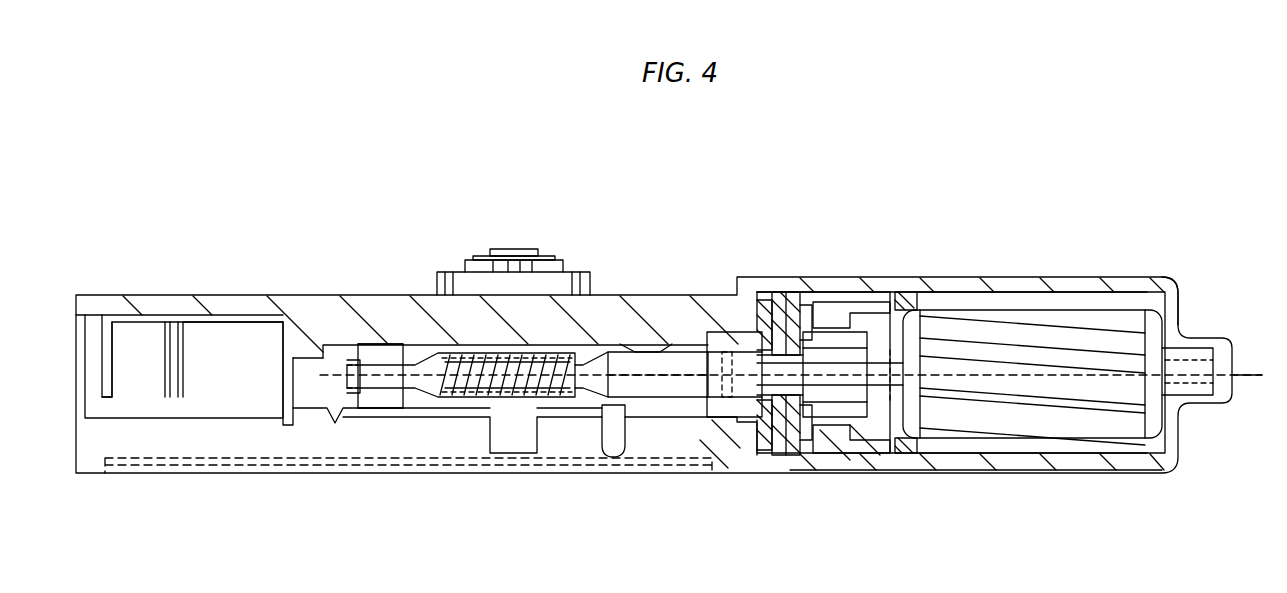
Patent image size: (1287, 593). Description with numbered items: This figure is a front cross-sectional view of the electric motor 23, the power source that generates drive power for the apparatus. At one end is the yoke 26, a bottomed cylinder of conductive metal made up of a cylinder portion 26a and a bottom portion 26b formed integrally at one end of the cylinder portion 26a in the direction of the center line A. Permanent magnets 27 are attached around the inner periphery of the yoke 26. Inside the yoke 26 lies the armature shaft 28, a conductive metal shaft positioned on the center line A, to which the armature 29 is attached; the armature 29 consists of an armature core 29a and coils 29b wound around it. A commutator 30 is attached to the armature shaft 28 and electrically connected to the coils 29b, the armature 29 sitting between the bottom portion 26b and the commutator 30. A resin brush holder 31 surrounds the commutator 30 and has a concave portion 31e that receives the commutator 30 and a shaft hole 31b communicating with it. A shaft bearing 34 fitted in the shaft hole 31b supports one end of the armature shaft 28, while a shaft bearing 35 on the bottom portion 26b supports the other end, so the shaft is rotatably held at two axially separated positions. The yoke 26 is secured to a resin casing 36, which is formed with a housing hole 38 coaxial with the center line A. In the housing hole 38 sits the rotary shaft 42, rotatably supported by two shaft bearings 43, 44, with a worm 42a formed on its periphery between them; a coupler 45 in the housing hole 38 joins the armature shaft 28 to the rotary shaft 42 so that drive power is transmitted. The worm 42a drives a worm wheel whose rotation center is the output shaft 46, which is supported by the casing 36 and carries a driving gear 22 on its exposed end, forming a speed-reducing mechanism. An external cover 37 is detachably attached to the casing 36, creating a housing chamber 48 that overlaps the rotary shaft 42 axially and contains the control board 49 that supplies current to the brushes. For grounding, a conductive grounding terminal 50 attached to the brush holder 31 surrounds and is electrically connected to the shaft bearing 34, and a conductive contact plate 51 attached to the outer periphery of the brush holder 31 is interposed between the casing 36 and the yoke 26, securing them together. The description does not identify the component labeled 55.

The driving gear 22 is at (548, 261).
The electric motor 23 is at (797, 210).
The yoke 26 is at (1015, 272).
The cylinder portion 26a is at (990, 455).
The bottom portion 26b is at (1190, 295).
The permanent magnets 27 is at (1112, 290).
The armature shaft 28 is at (875, 430).
The armature 29 is at (910, 292).
The armature core 29a is at (1122, 420).
The coils 29b is at (905, 445).
The commutator 30 is at (860, 330).
The brush holder 31 is at (845, 470).
The shaft hole 31b is at (775, 292).
The concave portion 31e is at (797, 292).
The shaft bearing 34 is at (772, 458).
The shaft bearing 35 is at (1188, 410).
The casing 36 is at (249, 288).
The external cover 37 is at (344, 482).
The housing hole 38 is at (405, 345).
The rotary shaft 42 is at (581, 408).
The worm 42a is at (468, 402).
The shaft bearing 43 is at (373, 345).
The shaft bearing 44 is at (650, 343).
The coupler 45 is at (727, 420).
The output shaft 46 is at (512, 256).
The housing chamber 48 is at (179, 478).
The control board 49 is at (248, 478).
The grounding terminal 50 is at (765, 298).
The contact plate 51 is at (798, 458).
The plate 55 is at (482, 256).
The center line A is at (1250, 398).